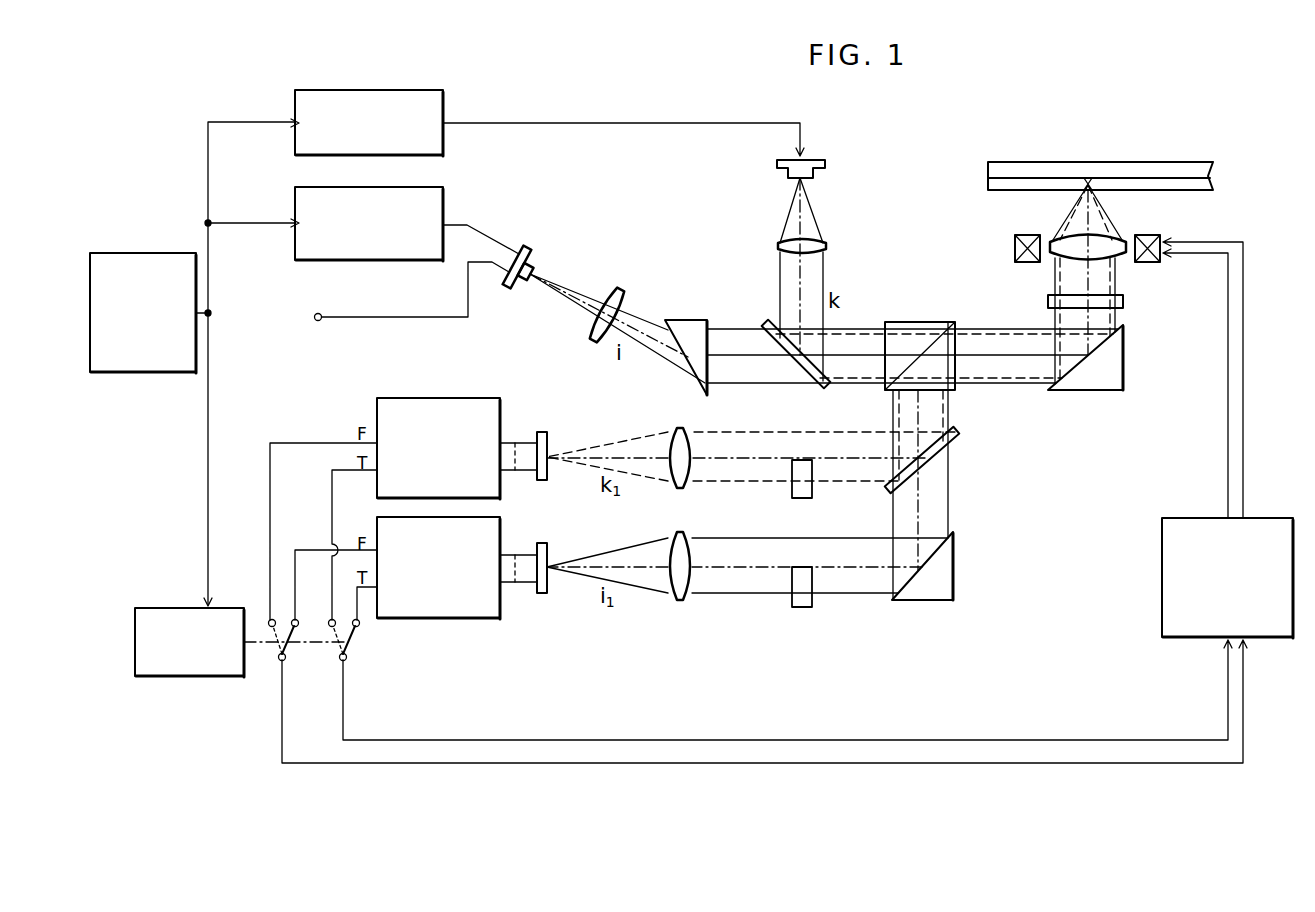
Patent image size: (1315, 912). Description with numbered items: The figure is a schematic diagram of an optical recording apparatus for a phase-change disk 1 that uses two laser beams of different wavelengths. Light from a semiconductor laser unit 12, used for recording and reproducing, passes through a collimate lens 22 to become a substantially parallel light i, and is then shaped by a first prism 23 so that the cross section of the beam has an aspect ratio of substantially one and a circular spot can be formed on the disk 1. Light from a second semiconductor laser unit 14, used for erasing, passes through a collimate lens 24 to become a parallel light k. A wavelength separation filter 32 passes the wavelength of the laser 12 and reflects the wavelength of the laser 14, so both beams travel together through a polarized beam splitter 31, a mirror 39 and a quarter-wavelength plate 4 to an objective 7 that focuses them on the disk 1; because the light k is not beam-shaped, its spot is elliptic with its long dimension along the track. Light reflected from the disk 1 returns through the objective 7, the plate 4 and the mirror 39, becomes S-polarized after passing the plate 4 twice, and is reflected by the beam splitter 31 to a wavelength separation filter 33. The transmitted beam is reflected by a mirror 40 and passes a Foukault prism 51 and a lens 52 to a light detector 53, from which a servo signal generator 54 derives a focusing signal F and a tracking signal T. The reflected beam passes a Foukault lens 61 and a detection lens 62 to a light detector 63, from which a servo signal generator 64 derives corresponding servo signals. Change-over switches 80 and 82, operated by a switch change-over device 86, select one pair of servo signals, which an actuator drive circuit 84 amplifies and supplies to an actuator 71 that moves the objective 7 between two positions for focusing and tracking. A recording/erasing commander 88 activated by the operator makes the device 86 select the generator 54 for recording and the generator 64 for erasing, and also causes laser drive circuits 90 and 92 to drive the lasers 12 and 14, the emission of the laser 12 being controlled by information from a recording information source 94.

The disk 1 is at (1165, 165).
The ¼-wavelength plate 4 is at (1125, 302).
The objective 7 is at (1120, 240).
The semiconductor laser unit 12 is at (521, 248).
The semiconductor laser unit 14 is at (823, 162).
The collimate lens 22 is at (612, 290).
The first prism 23 is at (685, 320).
The collimate lens 24 is at (826, 247).
The polarized beam splitter 31 is at (923, 322).
The wavelength separation filter 32 is at (815, 386).
The wavelength separation filter 33 is at (960, 433).
The mirror 39 is at (1125, 358).
The mirror 40 is at (920, 596).
The Foukault prism 51 is at (803, 606).
The lens 52 is at (683, 600).
The light detector 53 is at (540, 595).
The servo signal generator 54 is at (500, 537).
The Foukault lens 61 is at (810, 490).
The detection lens 62 is at (682, 470).
The light detector 63 is at (540, 430).
The servo signal generator 64 is at (452, 398).
The actuator 71 is at (1160, 258).
The change-over switch 80 is at (355, 638).
The change-over switch 82 is at (278, 648).
The actuator drive circuit 84 is at (1162, 578).
The switch change-over device 86 is at (180, 676).
The recording/erasing commander 88 is at (143, 253).
The laser drive circuit 90 is at (295, 190).
The laser drive circuit 92 is at (295, 92).
The recording information source 94 is at (318, 313).